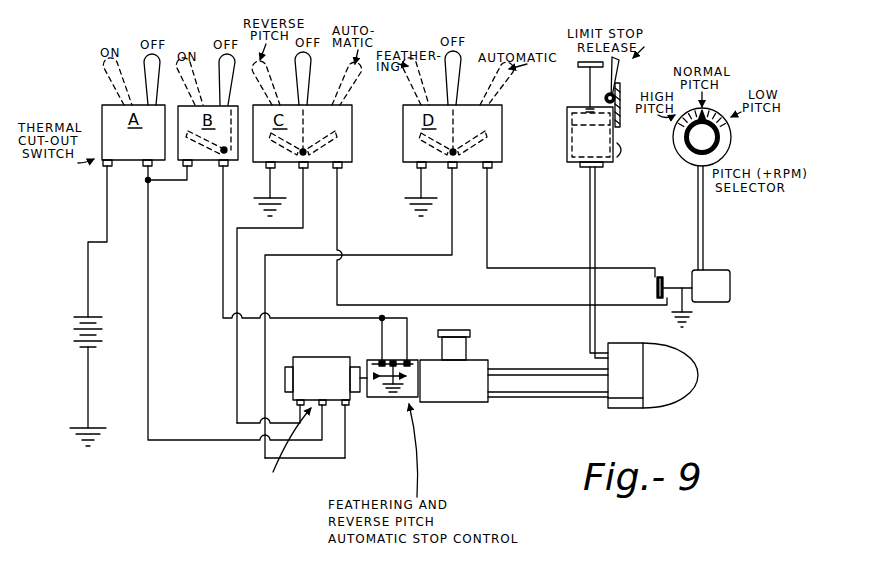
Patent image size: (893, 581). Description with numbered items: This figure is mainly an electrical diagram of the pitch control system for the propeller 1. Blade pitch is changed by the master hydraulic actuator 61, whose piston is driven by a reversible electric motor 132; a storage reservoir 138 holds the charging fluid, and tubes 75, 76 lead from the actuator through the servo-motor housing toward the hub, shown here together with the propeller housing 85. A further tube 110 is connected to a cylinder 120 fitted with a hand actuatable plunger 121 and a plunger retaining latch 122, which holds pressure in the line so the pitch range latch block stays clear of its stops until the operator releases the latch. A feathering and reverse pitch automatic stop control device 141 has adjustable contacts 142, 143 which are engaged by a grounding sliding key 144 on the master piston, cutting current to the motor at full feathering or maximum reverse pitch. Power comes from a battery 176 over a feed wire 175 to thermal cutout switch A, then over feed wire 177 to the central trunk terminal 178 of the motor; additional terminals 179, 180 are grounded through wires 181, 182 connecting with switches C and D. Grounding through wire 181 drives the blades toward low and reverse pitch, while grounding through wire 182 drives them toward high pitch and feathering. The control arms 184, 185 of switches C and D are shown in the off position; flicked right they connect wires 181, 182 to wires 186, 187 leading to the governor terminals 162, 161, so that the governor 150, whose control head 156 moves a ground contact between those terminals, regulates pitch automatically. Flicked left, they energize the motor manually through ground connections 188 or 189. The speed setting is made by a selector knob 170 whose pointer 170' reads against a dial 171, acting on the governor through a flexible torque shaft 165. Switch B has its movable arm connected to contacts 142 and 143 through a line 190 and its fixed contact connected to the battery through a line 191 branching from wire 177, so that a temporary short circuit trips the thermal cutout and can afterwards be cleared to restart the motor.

The propeller 1 is at (671, 385).
The master hydraulic actuator 61 is at (462, 386).
The tube 75 is at (570, 358).
The tube 76 is at (548, 397).
The propeller hub housing 85 is at (618, 409).
The tube 110 is at (590, 284).
The cylinder 120 is at (618, 140).
The hand actuatable plunger 121 is at (590, 128).
The plunger retaining latch 122 is at (598, 92).
The reversible electric motor 132 is at (310, 345).
The storage reservoir 138 is at (467, 343).
The feathering and reverse pitch automatic stop control device 141 is at (391, 397).
The adjustable contact 142 is at (370, 362).
The adjustable contact 143 is at (407, 361).
The sliding key 144 is at (394, 361).
The governor 150 is at (738, 297).
The control head 156 is at (655, 285).
The insulated electrical conductor terminal 161 is at (660, 277).
The insulated electrical conductor terminal 162 is at (665, 299).
The flexible torque shaft 165 is at (704, 222).
The selector knob 170 is at (731, 141).
The pointer 170' is at (732, 83).
The dial 171 is at (731, 127).
The feed wire 175 is at (107, 215).
The battery 176 is at (76, 321).
The feed wire 177 is at (148, 265).
The central trunk terminal 178 is at (343, 458).
The motor terminal 179 is at (298, 404).
The motor terminal 180 is at (348, 412).
The wire 181 is at (273, 229).
The wire 182 is at (407, 256).
The control arm 184 is at (311, 65).
The control arm 185 is at (458, 60).
The wire 186 is at (338, 225).
The wire 187 is at (490, 220).
The ground connection 188 is at (270, 185).
The ground connection 189 is at (421, 185).
The line 190 is at (222, 228).
The line 191 is at (163, 180).